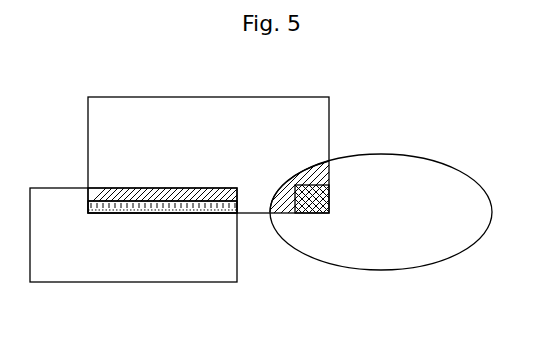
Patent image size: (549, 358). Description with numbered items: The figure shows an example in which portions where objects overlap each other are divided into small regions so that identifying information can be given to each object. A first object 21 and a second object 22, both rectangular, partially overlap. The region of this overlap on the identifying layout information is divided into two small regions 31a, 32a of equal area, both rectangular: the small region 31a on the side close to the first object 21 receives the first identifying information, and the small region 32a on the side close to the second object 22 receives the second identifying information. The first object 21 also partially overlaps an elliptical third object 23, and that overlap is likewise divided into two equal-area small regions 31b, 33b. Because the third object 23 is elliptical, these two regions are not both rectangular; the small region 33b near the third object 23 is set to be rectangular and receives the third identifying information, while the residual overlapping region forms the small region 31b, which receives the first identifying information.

The first object 21 is at (168, 97).
The second object 22 is at (110, 284).
The third object 23 is at (452, 165).
The small region 31a is at (147, 188).
The small region 31b is at (298, 177).
The small region 32a is at (170, 213).
The small region 33b is at (320, 214).